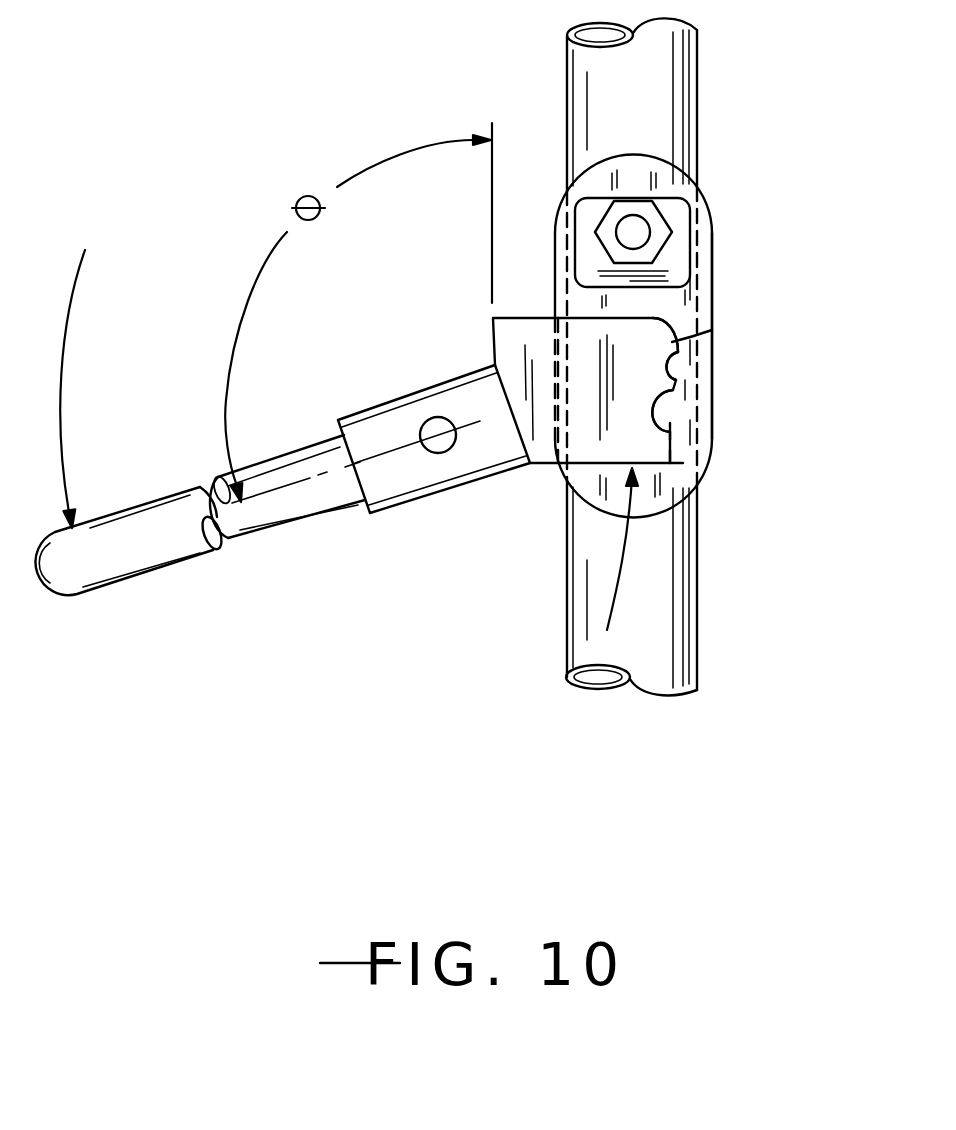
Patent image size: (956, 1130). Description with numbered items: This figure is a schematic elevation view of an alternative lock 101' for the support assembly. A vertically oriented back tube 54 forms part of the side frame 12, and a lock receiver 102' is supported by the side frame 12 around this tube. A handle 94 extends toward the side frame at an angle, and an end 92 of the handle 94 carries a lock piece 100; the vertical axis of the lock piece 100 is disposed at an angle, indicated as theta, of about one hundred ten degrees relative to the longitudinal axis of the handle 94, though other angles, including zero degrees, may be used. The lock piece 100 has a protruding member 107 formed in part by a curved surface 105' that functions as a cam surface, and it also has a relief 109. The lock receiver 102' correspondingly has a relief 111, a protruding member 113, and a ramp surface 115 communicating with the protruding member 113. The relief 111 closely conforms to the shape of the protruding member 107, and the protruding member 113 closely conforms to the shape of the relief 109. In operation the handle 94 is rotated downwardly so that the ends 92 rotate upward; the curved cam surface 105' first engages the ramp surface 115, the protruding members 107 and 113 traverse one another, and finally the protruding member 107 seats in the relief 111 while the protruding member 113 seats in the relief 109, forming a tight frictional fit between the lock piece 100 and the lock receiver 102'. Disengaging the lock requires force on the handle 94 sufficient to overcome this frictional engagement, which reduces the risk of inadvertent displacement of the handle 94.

The side frame 12 is at (473, 354).
The back tube 54 is at (697, 69).
The alternative lock 101' is at (718, 314).
The lock receiver 102' is at (799, 308).
The curved surface 105' is at (745, 305).
The protruding member 107 is at (672, 342).
The protruding member 113 is at (678, 363).
The relief 109 is at (655, 410).
The relief 111 is at (670, 423).
The ramp surface 115 is at (672, 486).
The handle 94 is at (258, 432).
The ends of the handle 92 is at (302, 446).
The end cap 100 is at (436, 528).